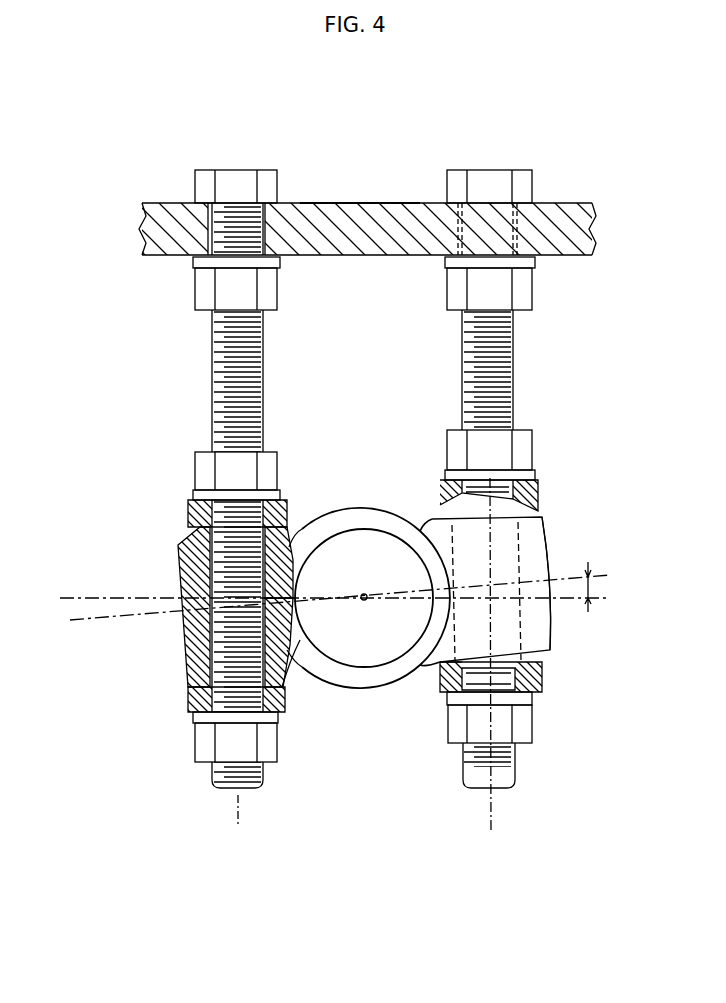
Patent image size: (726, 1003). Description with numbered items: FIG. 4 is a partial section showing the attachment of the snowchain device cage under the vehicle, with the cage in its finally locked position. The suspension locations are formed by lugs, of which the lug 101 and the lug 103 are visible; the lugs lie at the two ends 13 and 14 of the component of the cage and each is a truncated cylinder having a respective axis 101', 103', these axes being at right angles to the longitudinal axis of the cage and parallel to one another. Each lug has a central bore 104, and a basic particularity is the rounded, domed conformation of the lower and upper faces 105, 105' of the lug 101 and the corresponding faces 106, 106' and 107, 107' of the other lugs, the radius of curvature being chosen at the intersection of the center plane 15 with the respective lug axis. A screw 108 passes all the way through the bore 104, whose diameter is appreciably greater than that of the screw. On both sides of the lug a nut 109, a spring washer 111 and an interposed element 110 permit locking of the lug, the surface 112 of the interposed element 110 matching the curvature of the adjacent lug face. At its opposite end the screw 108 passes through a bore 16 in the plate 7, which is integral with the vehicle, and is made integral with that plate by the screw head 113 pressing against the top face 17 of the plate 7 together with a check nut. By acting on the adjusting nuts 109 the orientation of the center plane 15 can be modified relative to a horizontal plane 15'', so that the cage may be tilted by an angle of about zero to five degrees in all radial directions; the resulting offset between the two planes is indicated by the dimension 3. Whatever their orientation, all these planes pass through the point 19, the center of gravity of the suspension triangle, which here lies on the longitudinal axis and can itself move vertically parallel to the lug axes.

The offset distance 3 is at (597, 587).
The plate 7 is at (407, 201).
The end of the component 13 is at (372, 506).
The end of the component 14 is at (373, 570).
The center plane 15 is at (321, 618).
The horizontal plane 15'' is at (333, 572).
The bore 16 is at (168, 201).
The top face of the plate 17 is at (360, 200).
The point 19 is at (367, 595).
The lug 101 is at (526, 589).
The axis of the lug 101' is at (583, 583).
The lug 103 is at (155, 607).
The axis of the lug 103' is at (208, 502).
The central bore 104 is at (520, 520).
The lower face 105 is at (528, 673).
The upper face 105' is at (535, 473).
The lower face 106 is at (303, 680).
The upper face 106' is at (305, 517).
The lower face 107 is at (316, 682).
The upper face 107' is at (321, 514).
The screw 108 is at (515, 770).
The nut 109 is at (455, 738).
The interposed element 110 is at (440, 680).
The spring washer 111 is at (455, 708).
The surface of the interposed element 112 is at (283, 688).
The screw head 113 is at (487, 182).